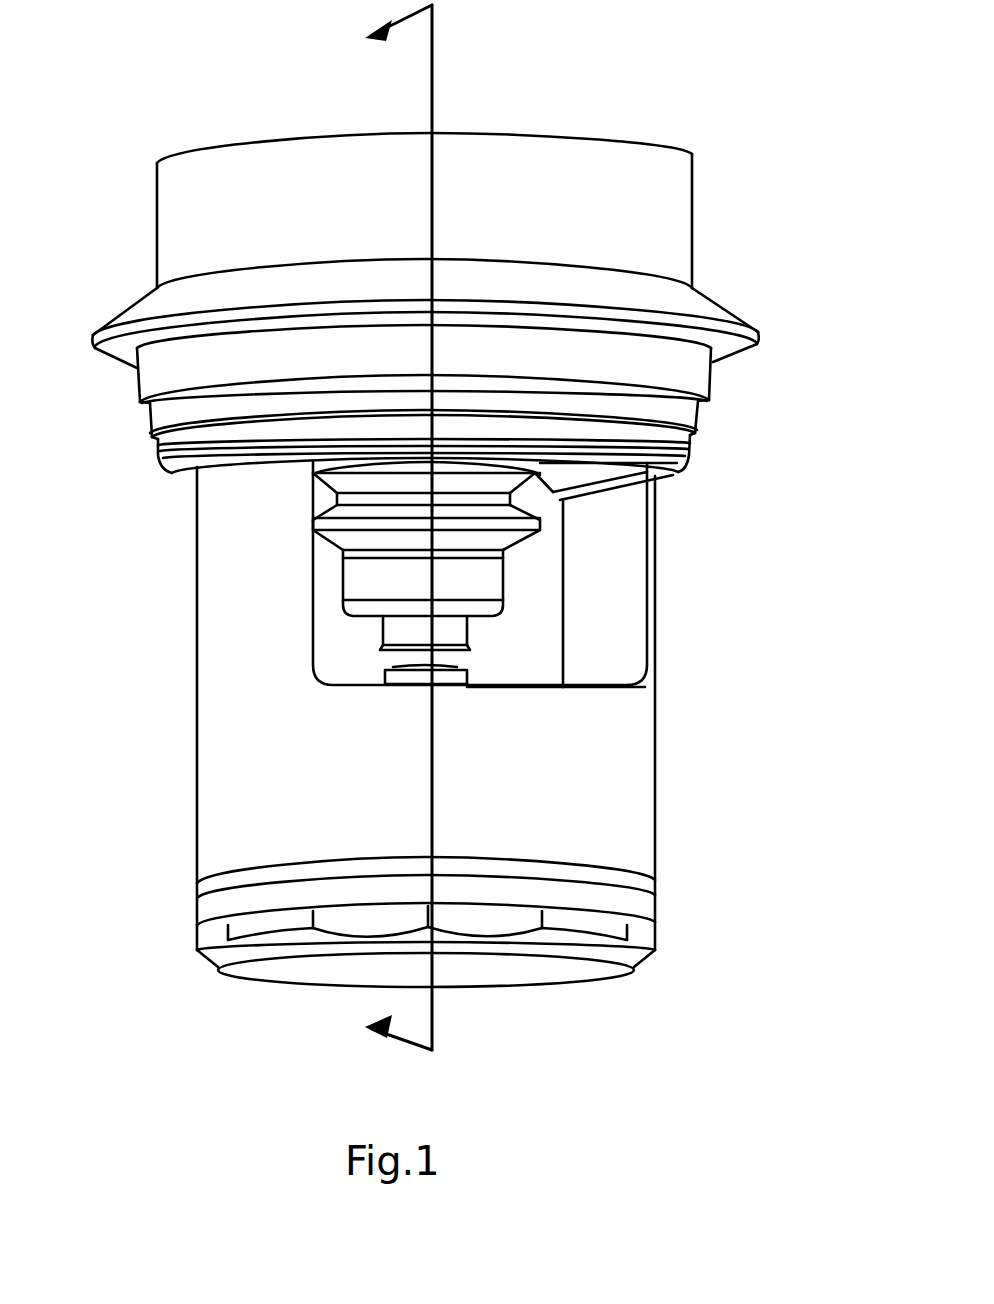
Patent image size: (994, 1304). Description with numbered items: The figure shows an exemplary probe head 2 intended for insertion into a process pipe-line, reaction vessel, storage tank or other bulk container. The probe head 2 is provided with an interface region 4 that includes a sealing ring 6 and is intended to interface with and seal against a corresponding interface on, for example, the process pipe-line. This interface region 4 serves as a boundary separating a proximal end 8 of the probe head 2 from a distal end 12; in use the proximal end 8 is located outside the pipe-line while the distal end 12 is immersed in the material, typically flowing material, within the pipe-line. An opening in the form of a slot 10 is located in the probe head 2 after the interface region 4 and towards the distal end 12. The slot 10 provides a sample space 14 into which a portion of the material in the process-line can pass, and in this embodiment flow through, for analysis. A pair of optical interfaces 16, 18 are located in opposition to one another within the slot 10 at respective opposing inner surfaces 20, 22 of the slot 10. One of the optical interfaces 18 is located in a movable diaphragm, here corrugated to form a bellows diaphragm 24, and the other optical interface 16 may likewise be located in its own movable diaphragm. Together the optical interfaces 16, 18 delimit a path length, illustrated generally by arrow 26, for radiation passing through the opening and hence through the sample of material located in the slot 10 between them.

The probe head 2 is at (765, 986).
The interface region 4 is at (92, 230).
The sealing ring 6 is at (185, 445).
The proximal end 8 is at (467, 128).
The slot 10 is at (617, 628).
The distal end 12 is at (463, 965).
The sample space 14 is at (328, 660).
The optical interface 16 is at (470, 688).
The optical interface 18 is at (425, 633).
The inner surface 20 is at (542, 680).
The inner surface 22 is at (568, 467).
The bellows diaphragm 24 is at (313, 520).
The arrow 26 is at (460, 655).